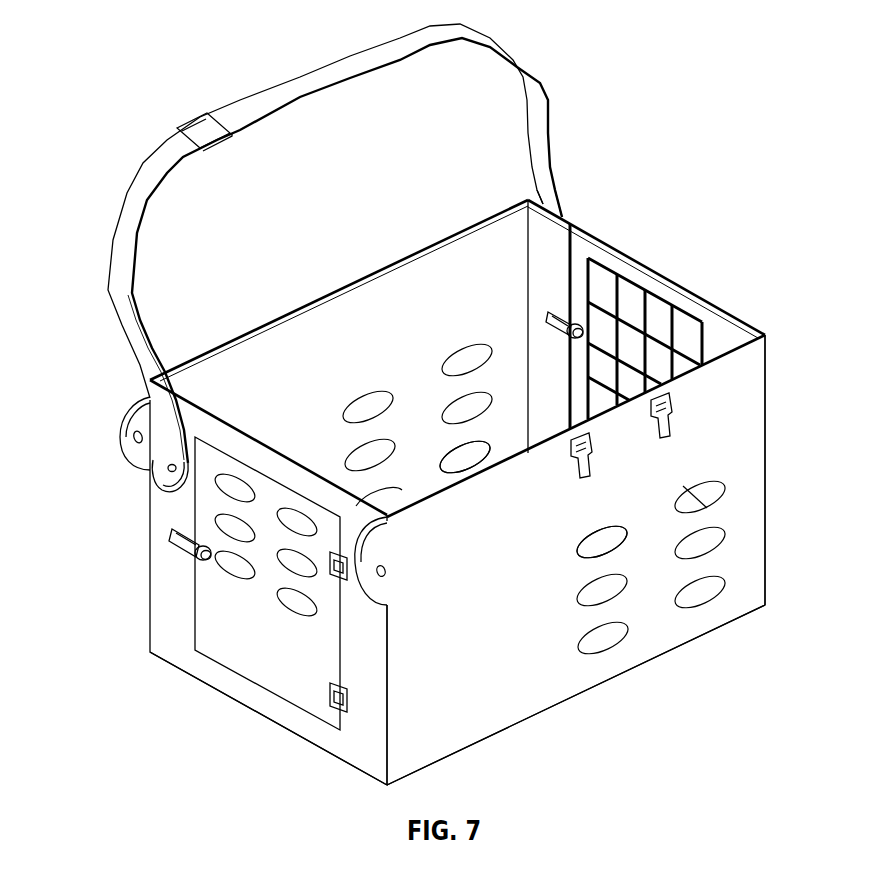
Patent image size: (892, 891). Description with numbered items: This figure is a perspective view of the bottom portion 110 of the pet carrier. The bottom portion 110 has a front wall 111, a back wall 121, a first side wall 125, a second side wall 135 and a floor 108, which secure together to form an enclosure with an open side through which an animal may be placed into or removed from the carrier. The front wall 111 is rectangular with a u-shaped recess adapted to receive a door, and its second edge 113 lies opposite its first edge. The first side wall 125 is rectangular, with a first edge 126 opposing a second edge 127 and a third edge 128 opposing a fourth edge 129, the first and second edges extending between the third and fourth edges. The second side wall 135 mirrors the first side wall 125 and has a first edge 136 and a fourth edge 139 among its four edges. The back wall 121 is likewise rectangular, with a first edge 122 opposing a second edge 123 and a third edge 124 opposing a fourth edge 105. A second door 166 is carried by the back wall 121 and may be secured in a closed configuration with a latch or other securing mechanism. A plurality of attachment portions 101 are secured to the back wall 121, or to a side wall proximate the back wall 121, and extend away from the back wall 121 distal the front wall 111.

The attachment portion 101 is at (108, 432).
The bottom portion 110 is at (128, 505).
The front wall 111 is at (564, 196).
The second door 166 is at (182, 509).
The second edge of the back wall 123 is at (148, 575).
The back wall 121 is at (136, 628).
The third edge of the back wall 124 is at (246, 701).
The second edge of the first side wall 127 is at (372, 778).
The first edge of the back wall 122 is at (390, 758).
The third edge of the first side wall 128 is at (638, 668).
The first side wall 125 is at (772, 491).
The first edge of the first side wall 126 is at (767, 400).
The floor 108 is at (598, 546).
The first edge of the second side wall 136 is at (507, 327).
The fourth edge of the first side wall 129 is at (437, 491).
The fourth edge of the back wall 105 is at (273, 451).
The fourth edge of the second side wall 139 is at (250, 334).
The second side wall 135 is at (364, 266).
The second edge of the front wall 113 is at (527, 245).